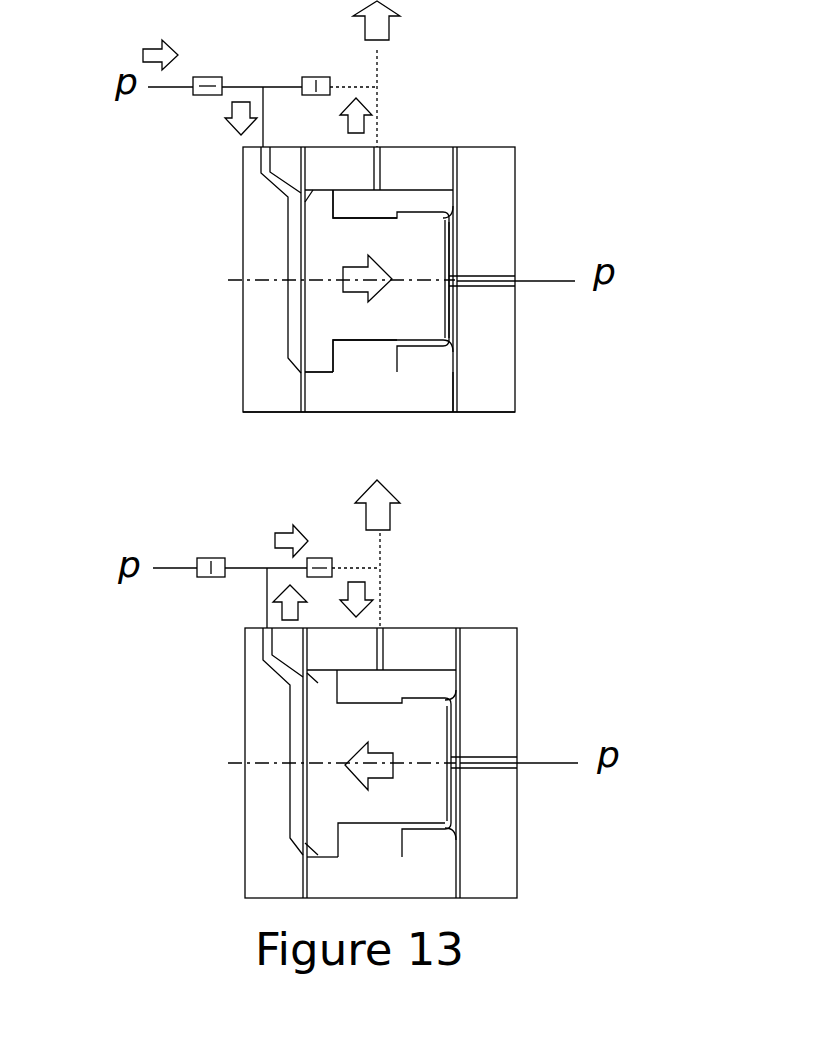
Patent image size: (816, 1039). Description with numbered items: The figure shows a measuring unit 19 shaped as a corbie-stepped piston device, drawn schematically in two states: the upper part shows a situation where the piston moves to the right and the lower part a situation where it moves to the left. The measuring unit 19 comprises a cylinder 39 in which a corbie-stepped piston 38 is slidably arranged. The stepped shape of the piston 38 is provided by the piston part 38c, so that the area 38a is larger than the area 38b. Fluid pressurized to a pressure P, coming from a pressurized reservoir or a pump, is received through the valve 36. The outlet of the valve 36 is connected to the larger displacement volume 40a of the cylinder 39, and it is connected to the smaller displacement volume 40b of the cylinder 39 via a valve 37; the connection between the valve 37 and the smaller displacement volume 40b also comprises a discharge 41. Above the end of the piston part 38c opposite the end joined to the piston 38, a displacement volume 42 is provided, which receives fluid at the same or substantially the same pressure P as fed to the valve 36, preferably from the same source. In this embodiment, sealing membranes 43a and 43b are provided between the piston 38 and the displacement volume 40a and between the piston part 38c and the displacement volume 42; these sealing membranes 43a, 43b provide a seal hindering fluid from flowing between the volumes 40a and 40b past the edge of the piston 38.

The measuring unit 19 is at (540, 108).
The valve 36 is at (207, 71).
The valve 37 is at (316, 71).
The corbie-stepped piston 38 is at (453, 212).
The area 38a is at (300, 240).
The area 38b is at (338, 203).
The piston part 38c is at (447, 272).
The cylinder 39 is at (347, 418).
The larger displacement volume 40a is at (293, 287).
The smaller displacement volume 40b is at (367, 362).
The discharge 41 is at (371, 119).
The displacement volume 42 is at (450, 322).
The sealing membrane 43a is at (307, 375).
The sealing membrane 43b is at (453, 413).